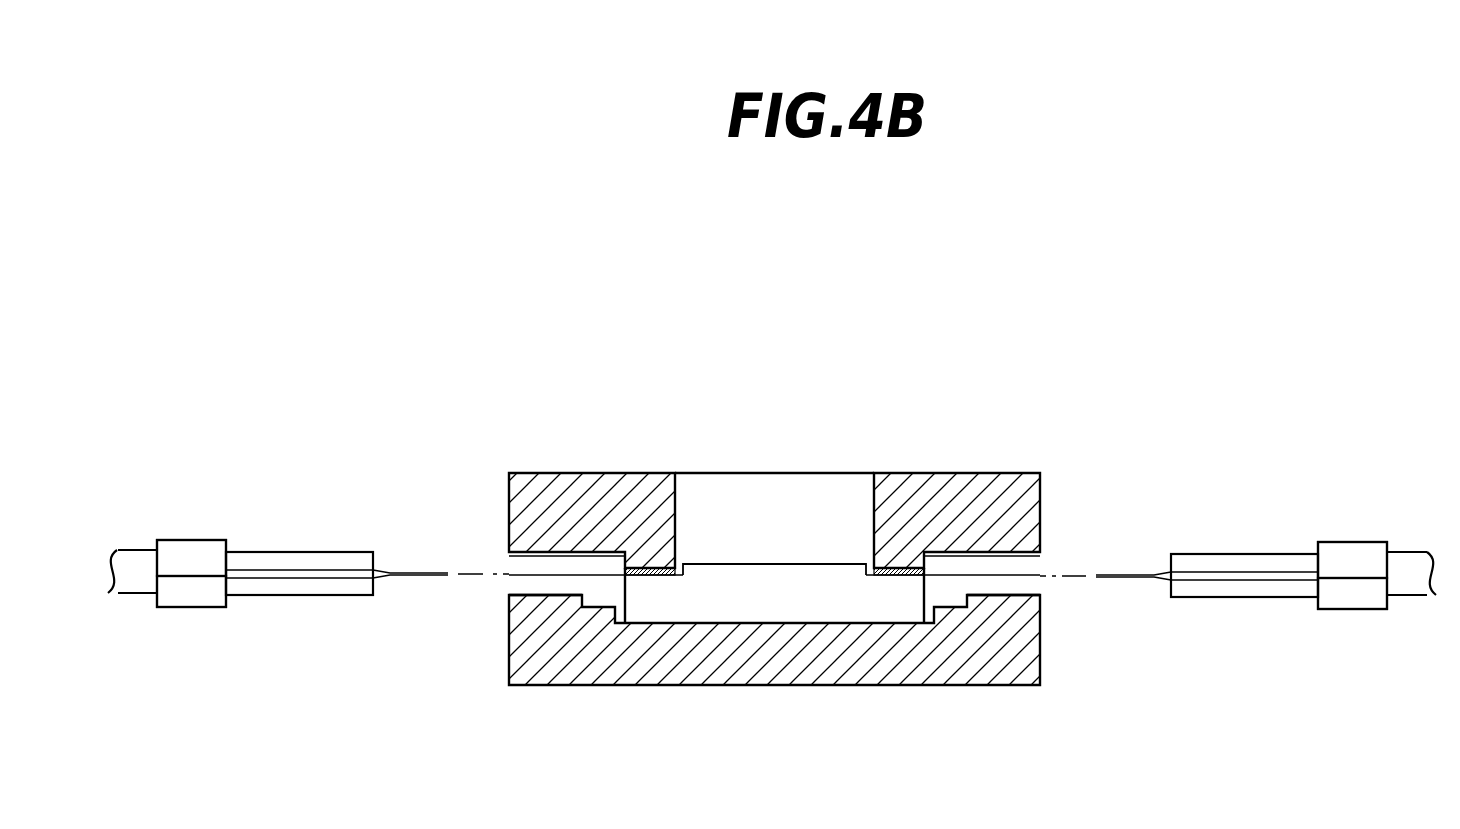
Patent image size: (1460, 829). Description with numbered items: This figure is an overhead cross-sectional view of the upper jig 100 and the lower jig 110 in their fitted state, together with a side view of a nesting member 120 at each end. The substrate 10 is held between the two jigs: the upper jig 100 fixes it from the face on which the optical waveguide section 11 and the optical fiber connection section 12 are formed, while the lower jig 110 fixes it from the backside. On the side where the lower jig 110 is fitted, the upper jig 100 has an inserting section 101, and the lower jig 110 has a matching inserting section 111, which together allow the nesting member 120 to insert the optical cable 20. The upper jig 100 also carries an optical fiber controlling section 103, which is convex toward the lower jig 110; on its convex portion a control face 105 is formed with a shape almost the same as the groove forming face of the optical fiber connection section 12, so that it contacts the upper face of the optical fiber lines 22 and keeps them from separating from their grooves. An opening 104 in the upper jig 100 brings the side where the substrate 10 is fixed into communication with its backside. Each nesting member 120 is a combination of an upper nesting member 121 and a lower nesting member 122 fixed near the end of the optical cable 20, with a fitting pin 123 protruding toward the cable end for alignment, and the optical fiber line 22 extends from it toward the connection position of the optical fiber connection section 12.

The upper jig 100 is at (970, 477).
The lower jig 110 is at (990, 685).
The inserting section 101 is at (533, 582).
The inserting section 111 is at (533, 582).
The optical fiber controlling section 103 is at (648, 566).
The opening 104 is at (742, 490).
The control face 105 is at (660, 573).
The substrate 10 is at (795, 595).
The optical waveguide section 11 is at (803, 562).
The optical fiber connection section 12 is at (648, 577).
The nesting member 120 is at (226, 512).
The upper nesting member 121 is at (183, 558).
The lower nesting member 122 is at (190, 597).
The optical cable 20 is at (280, 557).
The fitting pin 123 is at (318, 577).
The optical fiber line 22 is at (410, 572).